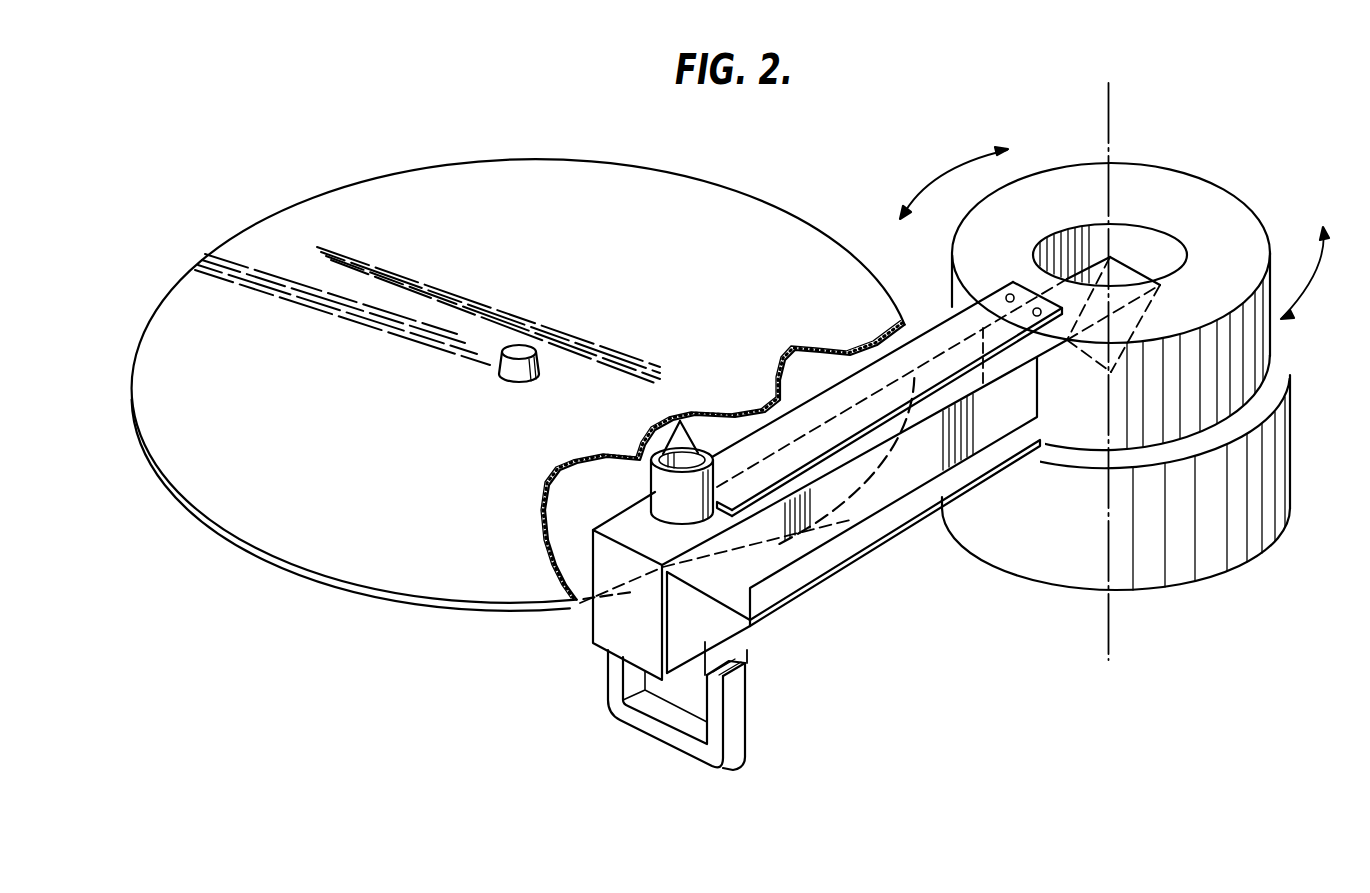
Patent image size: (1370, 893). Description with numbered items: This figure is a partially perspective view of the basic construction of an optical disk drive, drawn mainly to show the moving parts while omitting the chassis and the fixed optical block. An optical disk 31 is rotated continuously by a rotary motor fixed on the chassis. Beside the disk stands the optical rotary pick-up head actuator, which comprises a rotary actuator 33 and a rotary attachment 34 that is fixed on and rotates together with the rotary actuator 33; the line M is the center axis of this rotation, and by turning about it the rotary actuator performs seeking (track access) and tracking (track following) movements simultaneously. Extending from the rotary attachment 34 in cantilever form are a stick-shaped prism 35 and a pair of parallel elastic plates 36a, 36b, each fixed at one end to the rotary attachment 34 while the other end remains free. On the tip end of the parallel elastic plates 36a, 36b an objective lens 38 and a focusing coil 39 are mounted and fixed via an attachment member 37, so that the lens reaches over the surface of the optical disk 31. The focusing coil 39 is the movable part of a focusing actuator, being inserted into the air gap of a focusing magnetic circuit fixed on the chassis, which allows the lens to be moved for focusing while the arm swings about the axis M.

The optical disk 31 is at (326, 548).
The rotary actuator 33 is at (1212, 545).
The rotary attachment 34 is at (1200, 210).
The stick-shaped prism 35 is at (833, 540).
The parallel elastic plate 36a is at (807, 418).
The parallel elastic plate 36b is at (885, 535).
The attachment member 37 is at (603, 626).
The objective lens 38 is at (648, 452).
The focusing coil 39 is at (700, 752).
The center axis of the rotation M is at (1116, 632).